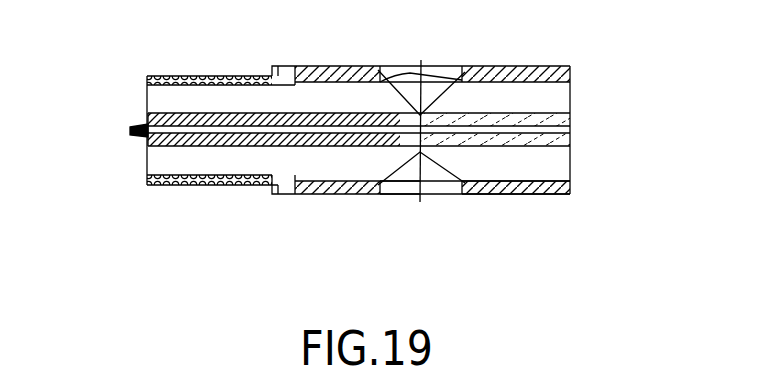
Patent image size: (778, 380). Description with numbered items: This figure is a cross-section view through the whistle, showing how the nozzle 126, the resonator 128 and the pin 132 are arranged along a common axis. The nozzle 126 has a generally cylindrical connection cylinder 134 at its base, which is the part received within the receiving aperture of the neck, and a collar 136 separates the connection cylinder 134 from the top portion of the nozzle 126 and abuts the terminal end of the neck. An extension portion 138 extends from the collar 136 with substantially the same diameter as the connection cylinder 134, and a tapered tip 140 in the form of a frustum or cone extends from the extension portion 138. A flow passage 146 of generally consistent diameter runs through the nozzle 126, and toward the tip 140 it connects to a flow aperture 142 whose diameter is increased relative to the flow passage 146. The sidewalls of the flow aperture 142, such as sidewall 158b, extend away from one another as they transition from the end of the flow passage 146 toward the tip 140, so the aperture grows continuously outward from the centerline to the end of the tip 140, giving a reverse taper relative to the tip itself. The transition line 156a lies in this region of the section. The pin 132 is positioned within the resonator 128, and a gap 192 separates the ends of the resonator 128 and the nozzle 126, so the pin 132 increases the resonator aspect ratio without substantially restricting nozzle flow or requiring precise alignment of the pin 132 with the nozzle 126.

The nozzle 126 is at (198, 176).
The resonator 128 is at (572, 166).
The pin 132 is at (572, 136).
The connection cylinder 134 is at (234, 176).
The collar 136 is at (283, 192).
The extension portion 138 is at (344, 172).
The tip 140 is at (398, 168).
The flow aperture 142 is at (380, 127).
The flow passage 146 is at (130, 131).
The upper taper line 156a is at (402, 122).
The sidewall 158b is at (414, 157).
The gap 192 is at (421, 60).